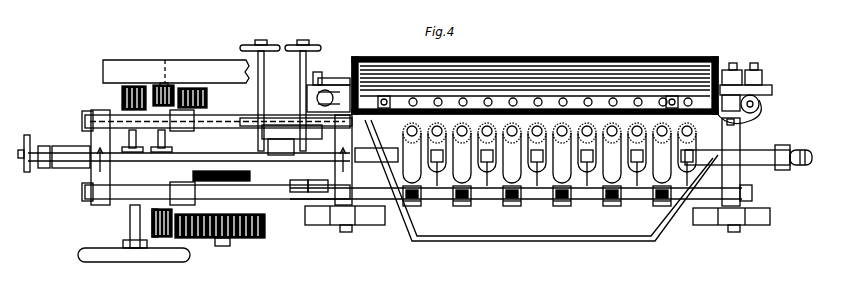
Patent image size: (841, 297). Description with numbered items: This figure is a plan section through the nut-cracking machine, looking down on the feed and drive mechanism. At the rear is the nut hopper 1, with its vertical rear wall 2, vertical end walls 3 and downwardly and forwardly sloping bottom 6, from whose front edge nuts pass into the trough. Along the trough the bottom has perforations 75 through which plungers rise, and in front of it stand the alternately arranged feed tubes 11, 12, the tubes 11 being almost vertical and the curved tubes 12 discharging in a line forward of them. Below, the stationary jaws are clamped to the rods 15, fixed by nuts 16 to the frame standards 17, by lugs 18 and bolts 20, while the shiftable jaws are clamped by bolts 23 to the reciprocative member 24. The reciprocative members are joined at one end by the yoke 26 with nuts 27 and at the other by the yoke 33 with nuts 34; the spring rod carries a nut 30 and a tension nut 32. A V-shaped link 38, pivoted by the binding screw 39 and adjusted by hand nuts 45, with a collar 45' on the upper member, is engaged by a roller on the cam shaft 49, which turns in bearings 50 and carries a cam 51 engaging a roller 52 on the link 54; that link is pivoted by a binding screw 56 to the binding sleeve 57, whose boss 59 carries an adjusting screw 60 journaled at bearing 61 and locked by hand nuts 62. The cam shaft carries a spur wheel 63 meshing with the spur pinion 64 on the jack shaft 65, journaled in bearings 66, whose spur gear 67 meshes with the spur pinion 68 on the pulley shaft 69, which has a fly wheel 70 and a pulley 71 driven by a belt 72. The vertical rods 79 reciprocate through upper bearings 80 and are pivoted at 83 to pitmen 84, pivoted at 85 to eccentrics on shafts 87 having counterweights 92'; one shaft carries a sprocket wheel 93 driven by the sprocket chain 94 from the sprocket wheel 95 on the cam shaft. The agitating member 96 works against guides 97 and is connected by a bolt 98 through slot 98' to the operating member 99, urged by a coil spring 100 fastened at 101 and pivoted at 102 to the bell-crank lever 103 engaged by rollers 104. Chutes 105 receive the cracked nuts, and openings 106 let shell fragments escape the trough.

The nut hopper 1 is at (540, 105).
The vertical rear wall 2 is at (520, 78).
The vertical end walls 3 is at (732, 70).
The downwardly and forwardly sloping bottom 6 is at (552, 70).
The feed tubes 11 is at (562, 154).
The feed tubes 12 is at (537, 153).
The rods 15 is at (598, 196).
The nuts 16 is at (82, 119).
The frame standards 17 is at (417, 176).
The lugs 18 is at (440, 200).
The bolts 20 is at (416, 206).
The bolts 23 is at (712, 165).
The reciprocative member 24 is at (378, 156).
The yoke 26 is at (782, 170).
The nuts 27 is at (806, 136).
The nut 30 is at (309, 193).
The tension nut 32 is at (812, 168).
The yoke 33 is at (55, 140).
The nuts 34 is at (62, 146).
The V-shaped link 38 is at (282, 142).
The binding screw 39 is at (300, 82).
The hand nuts 45 is at (345, 153).
The collar 45' is at (319, 235).
The cam shaft 49 is at (222, 246).
The bearings 50 is at (250, 238).
The cam 51 is at (202, 139).
The roller 52 is at (238, 118).
The link 54 is at (296, 118).
The binding screw 56 is at (263, 95).
The binding sleeve 57 is at (262, 199).
The boss 59 is at (217, 193).
The adjusting screw 60 is at (70, 168).
The bearing 61 is at (42, 168).
The hand nuts 62 is at (28, 135).
The spur wheel 63 is at (264, 238).
The spur pinion 64 is at (152, 220).
The jack shaft 65 is at (162, 238).
The bearings 66 is at (180, 96).
The spur gear 67 is at (207, 96).
The spur pinion 68 is at (122, 100).
The pulley shaft 69 is at (138, 60).
The fly wheel 70 is at (96, 262).
The pulley 71 is at (152, 70).
The belt 72 is at (195, 72).
The perforations 75 is at (513, 98).
The vertical rods 79 is at (772, 90).
The upper bearings 80 is at (760, 106).
The pivot 83 is at (754, 70).
The pitman 84 is at (752, 64).
The pivot 85 is at (735, 63).
The shafts 87 is at (346, 233).
The counterweights 92' is at (578, 229).
The sprocket wheel 93 is at (516, 191).
The sprocket chain 94 is at (305, 214).
The sprocket wheel 95 is at (210, 187).
The agitating member 96 is at (715, 100).
The guides 97 is at (384, 96).
The stud or bolt 98 is at (580, 70).
The slot 98' is at (615, 70).
The operating member 99 is at (416, 112).
The coil spring 100 is at (672, 96).
The fastening point 101 is at (738, 128).
The pivot 102 is at (293, 125).
The bell-crank lever 103 is at (366, 138).
The rollers 104 is at (307, 100).
The chutes 105 is at (565, 243).
The openings 106 is at (625, 108).